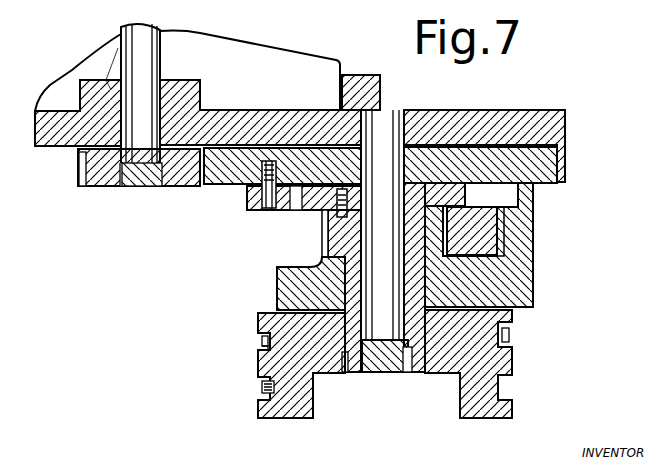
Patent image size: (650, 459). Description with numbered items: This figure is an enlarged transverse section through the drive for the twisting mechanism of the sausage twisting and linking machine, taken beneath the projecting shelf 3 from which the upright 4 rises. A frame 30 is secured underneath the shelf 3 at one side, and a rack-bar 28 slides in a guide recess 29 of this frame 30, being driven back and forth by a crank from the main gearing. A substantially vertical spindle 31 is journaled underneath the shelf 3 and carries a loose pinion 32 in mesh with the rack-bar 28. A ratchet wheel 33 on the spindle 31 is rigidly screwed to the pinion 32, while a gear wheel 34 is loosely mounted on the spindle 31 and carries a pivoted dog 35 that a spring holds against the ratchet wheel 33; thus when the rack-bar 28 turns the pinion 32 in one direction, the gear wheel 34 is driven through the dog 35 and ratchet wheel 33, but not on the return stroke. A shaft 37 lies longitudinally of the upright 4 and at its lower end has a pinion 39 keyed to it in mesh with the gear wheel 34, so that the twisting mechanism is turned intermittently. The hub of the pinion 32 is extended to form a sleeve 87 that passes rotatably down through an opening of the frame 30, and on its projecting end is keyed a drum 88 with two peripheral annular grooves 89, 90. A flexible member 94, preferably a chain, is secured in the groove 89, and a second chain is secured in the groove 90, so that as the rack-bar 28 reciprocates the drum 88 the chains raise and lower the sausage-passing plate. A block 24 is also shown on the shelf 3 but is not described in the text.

The shelf 3 is at (492, 117).
The upright 4 is at (293, 68).
The stop block 24 is at (357, 87).
The rack-bar 28 is at (477, 220).
The guide recess 29 is at (499, 240).
The frame 30 is at (518, 260).
The spindle 31 is at (383, 243).
The pinion 32 is at (326, 227).
The ratchet wheel 33 is at (465, 193).
The gear wheel 34 is at (425, 153).
The dog 35 is at (249, 196).
The shaft 37 is at (138, 48).
The pinion 39 is at (95, 170).
The sleeve 87 is at (343, 283).
The drum 88 is at (300, 362).
The groove 89 is at (262, 333).
The groove 90 is at (262, 385).
The flexible member 94 is at (265, 350).